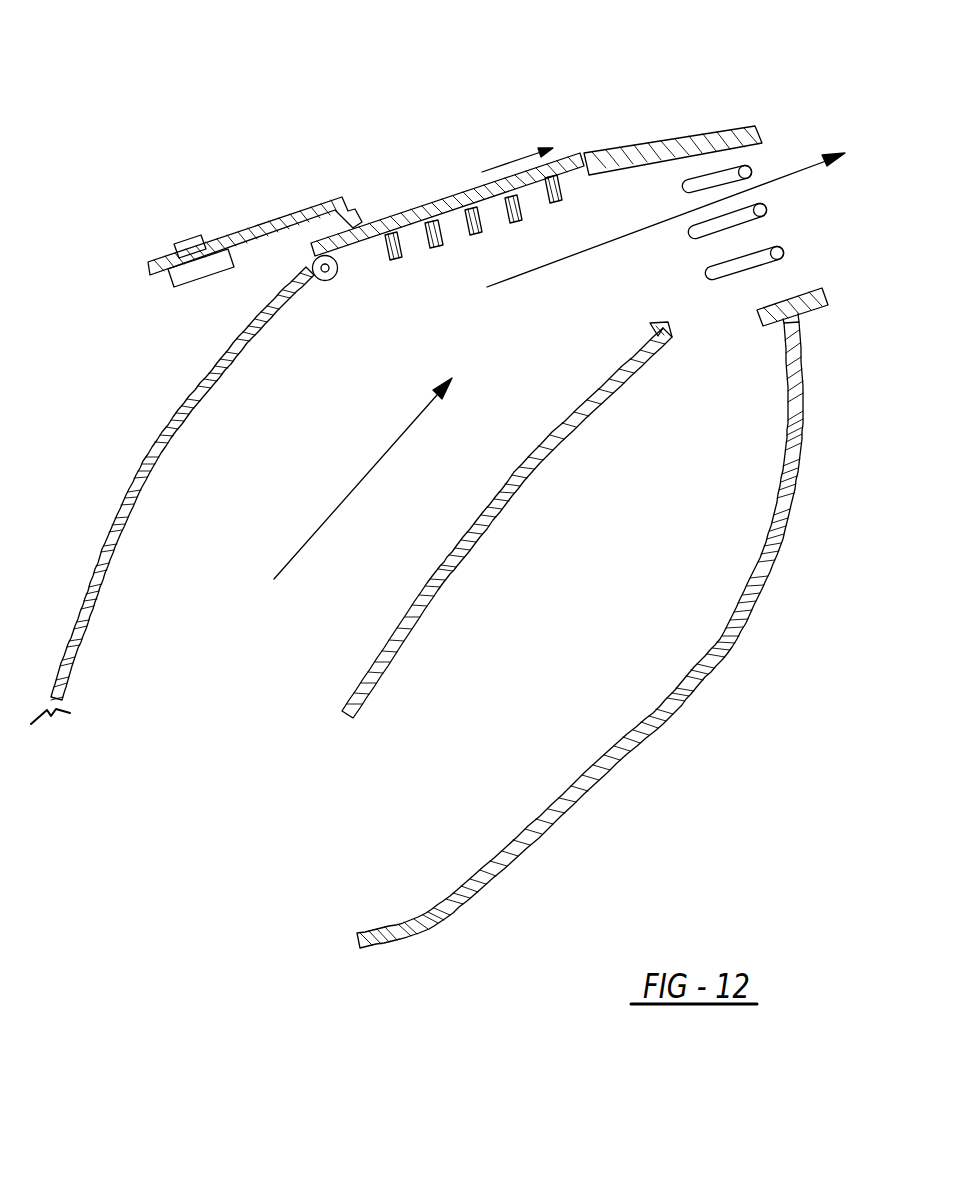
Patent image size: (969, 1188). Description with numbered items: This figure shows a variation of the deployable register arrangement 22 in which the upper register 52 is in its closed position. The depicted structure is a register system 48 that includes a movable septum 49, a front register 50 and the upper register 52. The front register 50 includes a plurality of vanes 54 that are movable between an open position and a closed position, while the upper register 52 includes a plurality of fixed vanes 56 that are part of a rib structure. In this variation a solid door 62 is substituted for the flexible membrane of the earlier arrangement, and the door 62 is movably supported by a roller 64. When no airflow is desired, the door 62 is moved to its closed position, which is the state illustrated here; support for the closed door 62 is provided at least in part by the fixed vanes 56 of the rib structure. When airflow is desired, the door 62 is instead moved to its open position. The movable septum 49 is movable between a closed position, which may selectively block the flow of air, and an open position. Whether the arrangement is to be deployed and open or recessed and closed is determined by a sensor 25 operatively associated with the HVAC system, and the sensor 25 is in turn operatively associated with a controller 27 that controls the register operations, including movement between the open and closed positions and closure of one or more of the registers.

The deployable register arrangement 22 is at (253, 230).
The sensor 25 is at (190, 243).
The controller 27 is at (180, 276).
The register system 48 is at (620, 215).
The movable septum 49 is at (462, 560).
The front register 50 is at (762, 288).
The upper register 52 is at (376, 197).
The vanes 54 is at (720, 172).
The fixed vanes 56 is at (397, 260).
The solid door 62 is at (456, 197).
The roller 64 is at (328, 273).